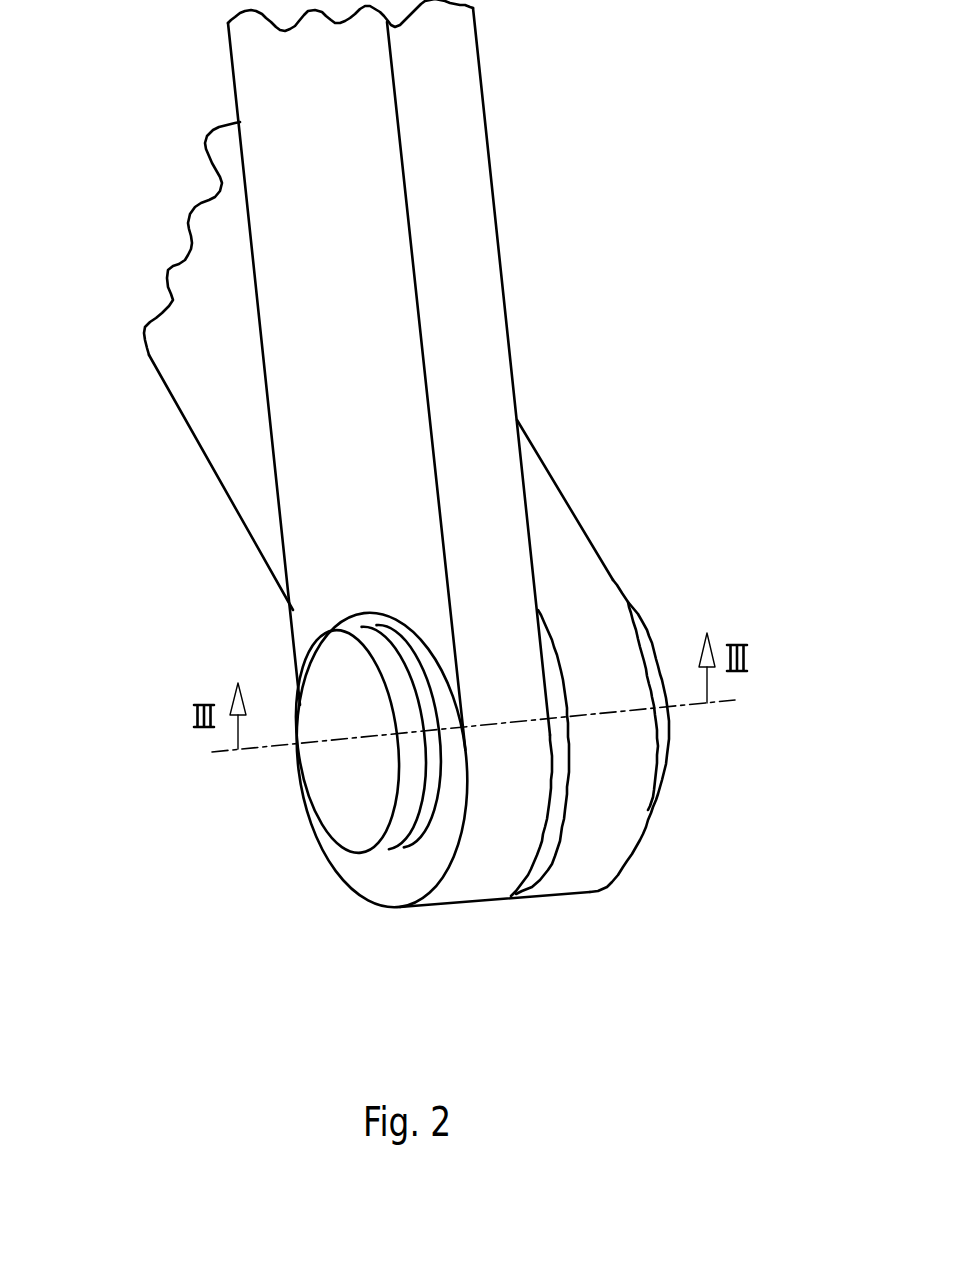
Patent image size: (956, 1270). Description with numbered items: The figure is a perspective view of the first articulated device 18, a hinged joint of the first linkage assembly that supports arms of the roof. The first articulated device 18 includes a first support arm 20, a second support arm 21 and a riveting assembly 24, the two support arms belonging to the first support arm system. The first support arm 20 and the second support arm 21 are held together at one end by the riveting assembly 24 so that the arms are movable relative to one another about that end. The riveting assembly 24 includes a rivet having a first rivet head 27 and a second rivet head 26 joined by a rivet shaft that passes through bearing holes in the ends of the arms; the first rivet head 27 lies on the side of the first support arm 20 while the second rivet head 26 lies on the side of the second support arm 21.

The first articulated device 18 is at (638, 872).
The first support arm 20 is at (502, 262).
The second support arm 21 is at (197, 443).
The riveting assembly 24 is at (655, 630).
The second rivet head 26 is at (680, 795).
The first rivet head 27 is at (315, 790).